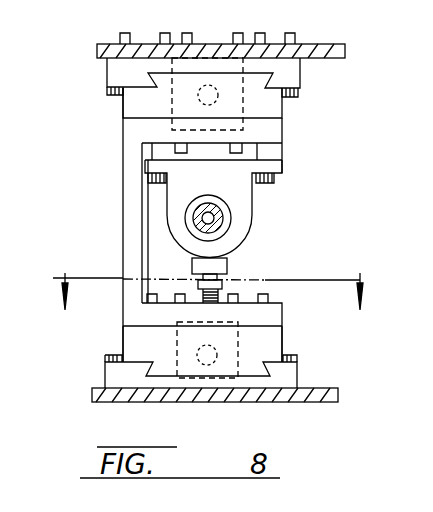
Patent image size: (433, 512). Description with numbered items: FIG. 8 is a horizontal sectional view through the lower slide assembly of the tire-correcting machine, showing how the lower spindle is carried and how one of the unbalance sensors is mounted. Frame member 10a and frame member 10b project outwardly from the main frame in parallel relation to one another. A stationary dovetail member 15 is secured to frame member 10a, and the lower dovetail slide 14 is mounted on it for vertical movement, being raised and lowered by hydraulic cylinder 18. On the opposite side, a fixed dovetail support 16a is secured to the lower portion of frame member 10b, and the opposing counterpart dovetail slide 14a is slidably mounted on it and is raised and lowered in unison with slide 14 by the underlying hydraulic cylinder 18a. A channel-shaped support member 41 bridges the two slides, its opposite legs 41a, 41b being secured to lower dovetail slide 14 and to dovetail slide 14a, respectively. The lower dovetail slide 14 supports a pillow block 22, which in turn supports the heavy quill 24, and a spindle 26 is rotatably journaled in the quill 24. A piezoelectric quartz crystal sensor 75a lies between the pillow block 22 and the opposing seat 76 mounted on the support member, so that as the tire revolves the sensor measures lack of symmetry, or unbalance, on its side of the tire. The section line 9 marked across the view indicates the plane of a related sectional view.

The upper plate 10a is at (345, 44).
The lower plate 10b is at (326, 403).
The upper mounting block 14 is at (272, 107).
The lower mounting block 14a is at (275, 340).
The upper dovetail clamp block 15 is at (300, 78).
The lower dovetail clamp block 16a is at (297, 380).
The upper bore (hidden) 18 is at (186, 75).
The lower bore (hidden) 18a is at (177, 341).
The bracket 22 is at (253, 232).
The hub 24 is at (206, 196).
The shaft bearing 26 is at (225, 215).
The housing 41 is at (125, 212).
The housing upper arm 41a is at (272, 133).
The housing lower arm 41b is at (273, 322).
The adjusting nut 75a is at (230, 278).
The adjusting screw 76 is at (224, 282).
The section line 9- 9 is at (215, 294).